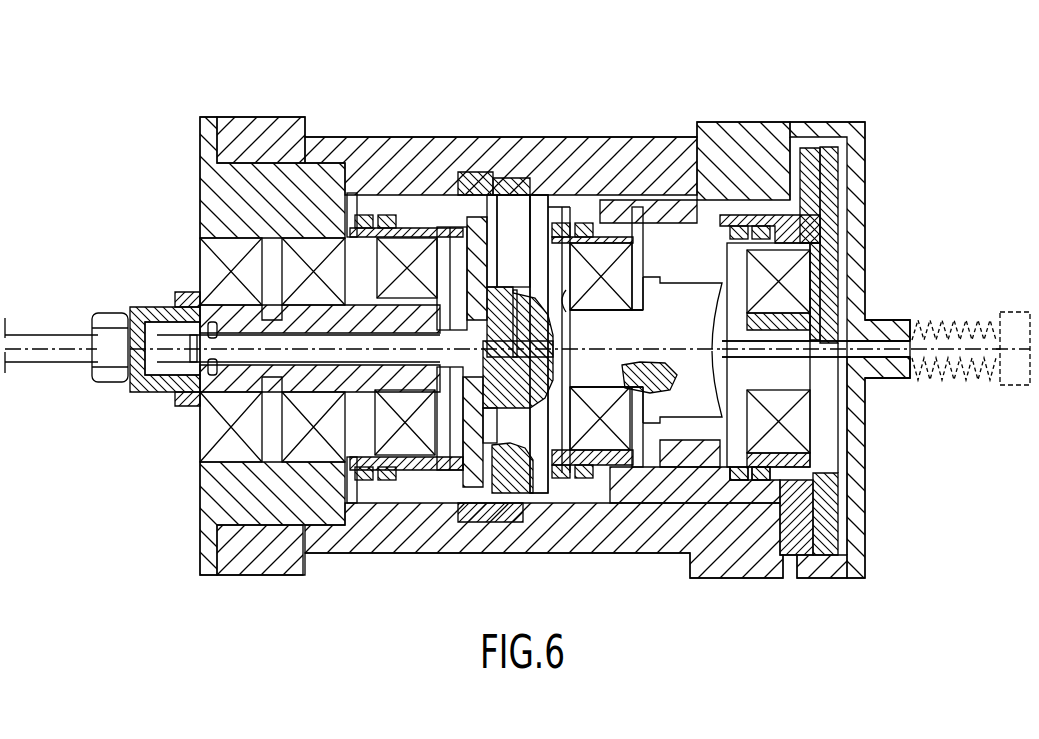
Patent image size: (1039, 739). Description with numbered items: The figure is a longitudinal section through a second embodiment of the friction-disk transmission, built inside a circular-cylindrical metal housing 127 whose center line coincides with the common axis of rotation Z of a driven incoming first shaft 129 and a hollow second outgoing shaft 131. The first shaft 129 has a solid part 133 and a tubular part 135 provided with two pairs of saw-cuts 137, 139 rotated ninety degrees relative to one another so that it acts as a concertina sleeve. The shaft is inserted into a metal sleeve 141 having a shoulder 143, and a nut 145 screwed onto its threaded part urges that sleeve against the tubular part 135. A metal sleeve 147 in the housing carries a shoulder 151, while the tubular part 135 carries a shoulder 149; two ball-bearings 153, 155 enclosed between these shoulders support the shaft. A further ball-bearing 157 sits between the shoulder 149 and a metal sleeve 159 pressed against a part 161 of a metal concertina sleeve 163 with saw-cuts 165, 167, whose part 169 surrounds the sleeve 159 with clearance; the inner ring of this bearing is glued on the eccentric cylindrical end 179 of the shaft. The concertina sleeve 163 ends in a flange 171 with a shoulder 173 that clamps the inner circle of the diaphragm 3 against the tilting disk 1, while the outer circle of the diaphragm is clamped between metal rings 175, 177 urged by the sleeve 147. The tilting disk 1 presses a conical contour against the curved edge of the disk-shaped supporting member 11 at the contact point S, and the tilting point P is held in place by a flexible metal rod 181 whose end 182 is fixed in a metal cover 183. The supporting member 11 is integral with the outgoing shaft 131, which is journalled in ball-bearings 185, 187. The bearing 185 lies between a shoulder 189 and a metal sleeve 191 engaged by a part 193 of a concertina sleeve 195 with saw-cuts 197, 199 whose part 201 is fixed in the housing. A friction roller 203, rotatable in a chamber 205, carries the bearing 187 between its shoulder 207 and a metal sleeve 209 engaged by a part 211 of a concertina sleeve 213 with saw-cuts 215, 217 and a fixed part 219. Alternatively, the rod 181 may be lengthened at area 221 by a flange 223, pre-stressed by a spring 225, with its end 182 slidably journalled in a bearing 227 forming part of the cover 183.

The tilting disk 1 is at (467, 522).
The diaphragm 3 is at (490, 243).
The supporting member 11 is at (535, 490).
The housing 127 is at (617, 537).
The first shaft 129 is at (30, 297).
The second outgoing shaft 131 is at (620, 332).
The solid part 133 is at (70, 340).
The tubular part 135 is at (163, 315).
The saw-cuts 137 is at (213, 338).
The saw-cuts 139 is at (187, 352).
The metal sleeve 141 is at (143, 327).
The shoulder 143 is at (187, 297).
The nut 145 is at (110, 320).
The metal sleeve 147 is at (263, 178).
The shoulder 149 is at (398, 347).
The shoulder 151 is at (270, 453).
The ball-bearing 153 is at (207, 260).
The ball-bearing 155 is at (318, 195).
The ball-bearing 157 is at (412, 250).
The metal sleeve 159 is at (393, 233).
The part of concertina sleeve 161 is at (365, 228).
The concertina sleeve 163 is at (420, 490).
The saw-cuts 165 is at (372, 485).
The saw-cuts 167 is at (392, 483).
The part of concertina sleeve 169 is at (445, 218).
The flange 171 is at (473, 445).
The shoulder 173 is at (500, 313).
The metal ring 175 is at (478, 172).
The metal ring 177 is at (513, 180).
The cylindrical end 179 is at (390, 318).
The flexible metal rod 181 is at (548, 352).
The end of rod 182 is at (893, 353).
The metal cover 183 is at (857, 223).
The ball-bearing 185 is at (627, 267).
The ball-bearing 187 is at (802, 280).
The shoulder 189 is at (566, 300).
The metal sleeve 191 is at (593, 237).
The part of concertina sleeve 193 is at (567, 217).
The concertina sleeve 195 is at (688, 503).
The saw-cuts 197 is at (567, 473).
The saw-cuts 199 is at (588, 473).
The part of concertina sleeve 201 is at (712, 207).
The friction roller 203 is at (672, 292).
The chamber 205 is at (665, 447).
The shoulder 207 is at (717, 323).
The metal sleeve 209 is at (777, 240).
The part of concertina sleeve 211 is at (743, 228).
The concertina sleeve 213 is at (827, 604).
The saw-cuts 215 is at (745, 480).
The saw-cuts 217 is at (772, 480).
The part of concertina sleeve 219 is at (828, 153).
The area 221 is at (955, 375).
The flange 223 is at (1010, 307).
The spring 225 is at (948, 315).
The bearing 227 is at (887, 330).
The tilting point p is at (480, 348).
The contact point S is at (507, 487).
The Z-axis Z is at (62, 368).